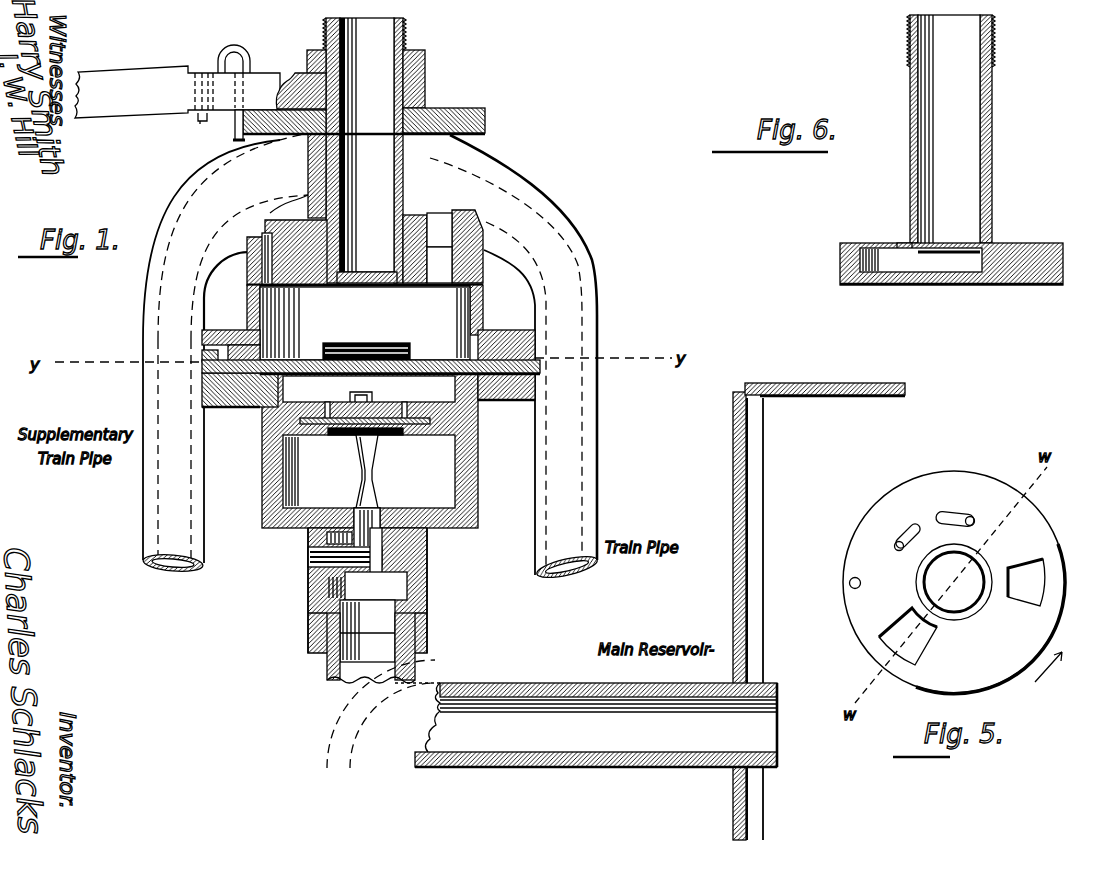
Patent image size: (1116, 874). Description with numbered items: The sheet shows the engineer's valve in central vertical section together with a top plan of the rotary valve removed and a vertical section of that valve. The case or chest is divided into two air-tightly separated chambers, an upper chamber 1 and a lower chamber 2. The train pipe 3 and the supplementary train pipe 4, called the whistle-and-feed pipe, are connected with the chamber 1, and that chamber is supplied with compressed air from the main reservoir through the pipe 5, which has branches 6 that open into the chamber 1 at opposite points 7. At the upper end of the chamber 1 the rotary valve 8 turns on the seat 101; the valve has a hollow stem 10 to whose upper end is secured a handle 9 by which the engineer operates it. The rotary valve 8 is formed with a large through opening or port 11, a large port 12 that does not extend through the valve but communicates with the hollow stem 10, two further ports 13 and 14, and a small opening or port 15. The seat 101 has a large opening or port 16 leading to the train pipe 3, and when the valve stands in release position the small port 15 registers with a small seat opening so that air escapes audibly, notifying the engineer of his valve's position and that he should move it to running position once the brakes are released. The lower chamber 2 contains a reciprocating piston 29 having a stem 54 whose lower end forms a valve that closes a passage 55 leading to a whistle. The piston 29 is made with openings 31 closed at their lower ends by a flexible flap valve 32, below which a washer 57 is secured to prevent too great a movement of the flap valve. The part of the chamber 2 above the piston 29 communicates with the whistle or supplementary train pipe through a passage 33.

In FIG. 1, the chamber 1 is at (365, 323).
In FIG. 1, the lower chamber 2 is at (369, 471).
In FIG. 1, the train pipe 3 is at (514, 358).
In FIG. 1, the supplementary train pipe 4 is at (226, 353).
In FIG. 1, the pipe 5 is at (327, 669).
In FIG. 1, the branches 6 is at (368, 587).
In FIG. 1, the opposite points 7 is at (362, 341).
In FIG. 1, the rotary valve 8 is at (410, 282).
In FIG. 6, the rotary valve 8 is at (1013, 286).
In FIG. 1, the handle 9 is at (177, 84).
In FIG. 1, the hollow stem 10 is at (350, 190).
In FIG. 6, the hollow stem 10 is at (935, 160).
In FIG. 5, the hollow stem 10 is at (985, 607).
In FIG. 1, the through opening or port 11 is at (441, 283).
In FIG. 5, the through opening or port 11 is at (1033, 586).
In FIG. 6, the port 12 is at (878, 258).
In FIG. 5, the port 12 is at (893, 641).
In FIG. 5, the port 13 is at (897, 542).
In FIG. 5, the port 14 is at (966, 515).
In FIG. 1, the small opening or port 15 is at (258, 230).
In FIG. 5, the small opening or port 15 is at (849, 582).
In FIG. 1, the large opening or port 16 is at (438, 222).
In FIG. 1, the reciprocating piston 29 is at (385, 402).
In FIG. 1, the openings 31 is at (328, 402).
In FIG. 1, the flexible flap valve 32 is at (403, 436).
In FIG. 1, the passage 33 is at (243, 404).
In FIG. 1, the stem 54 is at (360, 475).
In FIG. 1, the passage 55 is at (310, 557).
In FIG. 1, the washer 57 is at (343, 437).
In FIG. 1, the seat 101 is at (307, 286).